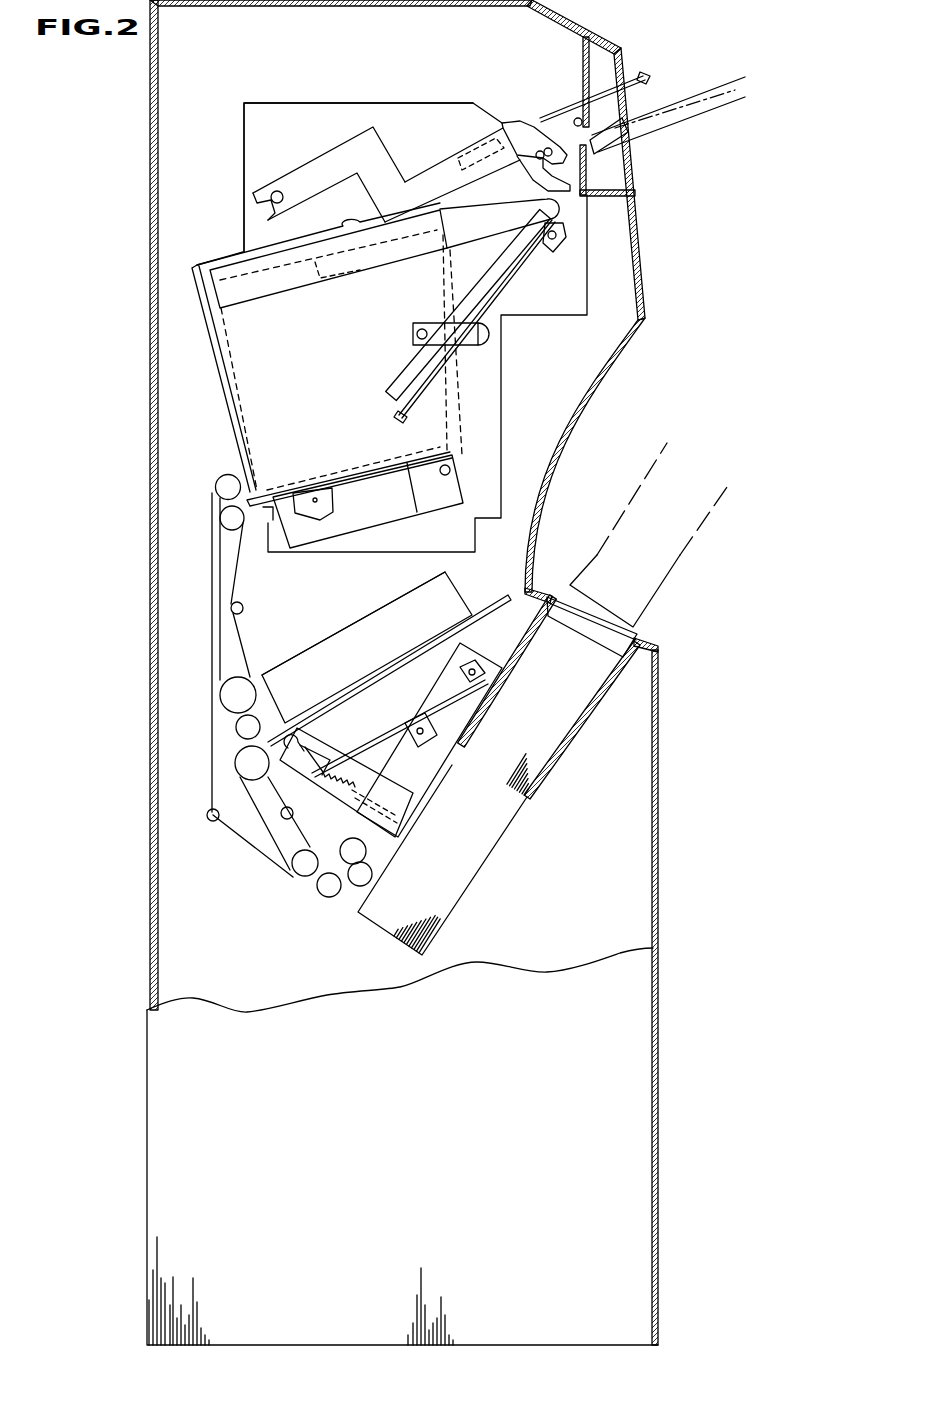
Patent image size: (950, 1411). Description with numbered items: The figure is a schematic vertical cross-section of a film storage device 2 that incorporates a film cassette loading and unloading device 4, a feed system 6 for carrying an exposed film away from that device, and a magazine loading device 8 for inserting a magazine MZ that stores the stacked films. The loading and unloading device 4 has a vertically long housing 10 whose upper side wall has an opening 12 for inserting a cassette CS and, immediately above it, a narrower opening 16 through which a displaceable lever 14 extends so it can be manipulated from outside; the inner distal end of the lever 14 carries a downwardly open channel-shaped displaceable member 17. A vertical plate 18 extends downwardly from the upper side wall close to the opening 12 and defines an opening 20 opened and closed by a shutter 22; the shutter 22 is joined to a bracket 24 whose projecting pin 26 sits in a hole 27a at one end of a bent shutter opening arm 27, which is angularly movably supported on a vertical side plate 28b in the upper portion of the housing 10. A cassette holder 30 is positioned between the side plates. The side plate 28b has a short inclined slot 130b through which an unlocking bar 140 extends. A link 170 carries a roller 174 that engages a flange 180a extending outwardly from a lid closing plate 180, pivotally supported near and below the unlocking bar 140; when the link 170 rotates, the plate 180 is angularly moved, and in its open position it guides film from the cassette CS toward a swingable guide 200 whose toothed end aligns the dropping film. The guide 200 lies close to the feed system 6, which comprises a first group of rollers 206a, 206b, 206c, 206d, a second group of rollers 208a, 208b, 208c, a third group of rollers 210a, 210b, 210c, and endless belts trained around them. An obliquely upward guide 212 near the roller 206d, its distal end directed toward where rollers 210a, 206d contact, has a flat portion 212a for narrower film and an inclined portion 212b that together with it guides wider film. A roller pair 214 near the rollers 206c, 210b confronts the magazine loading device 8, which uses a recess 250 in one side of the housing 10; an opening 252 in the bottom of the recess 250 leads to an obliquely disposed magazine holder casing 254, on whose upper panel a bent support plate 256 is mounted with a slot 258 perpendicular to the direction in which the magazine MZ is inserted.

The film storage device 2 is at (622, 29).
The film cassette loading and unloading device 4 is at (180, 341).
The feed system 6 is at (197, 613).
The magazine loading device 8 is at (558, 801).
The housing 10 is at (150, 70).
The opening 12 is at (630, 138).
The displaceable lever 14 is at (645, 78).
The narrower opening 16 is at (630, 90).
The channel-shaped displaceable member 17 is at (535, 130).
The vertical plate 18 is at (585, 62).
The opening 20 is at (583, 157).
The shutter 22 is at (590, 187).
The bracket 24 is at (573, 130).
The projecting pin 26 is at (520, 135).
The shutter opening arm 27 is at (363, 147).
The hole 27a is at (510, 133).
The side plate 28b is at (275, 128).
The cassette holder 30 is at (252, 368).
The inclined slot 130b is at (562, 225).
The unlocking bar 140 is at (557, 215).
The link 170 is at (432, 323).
The roller 174 is at (493, 337).
The lid closing plate 180 is at (440, 362).
The flange 180a is at (398, 415).
The swingable guide 200 is at (363, 501).
The roller 206a is at (228, 488).
The roller 206b is at (213, 820).
The roller 206c is at (328, 890).
The roller 206d is at (248, 727).
The roller 208a is at (225, 520).
The roller 208b is at (241, 607).
The roller 208c is at (240, 690).
The roller 210a is at (252, 763).
The roller 210b is at (303, 866).
The roller 210c is at (292, 815).
The guide 212 is at (450, 652).
The flat portion 212a is at (497, 600).
The inclined portion 212b is at (395, 660).
The roller pair 214 is at (358, 880).
The recess 250 is at (630, 457).
The opening 252 is at (634, 636).
The magazine holder casing 254 is at (585, 720).
The bent support plate 256 is at (427, 767).
The slot 258 is at (300, 750).
The cassette CS is at (718, 102).
The magazine MZ is at (700, 553).